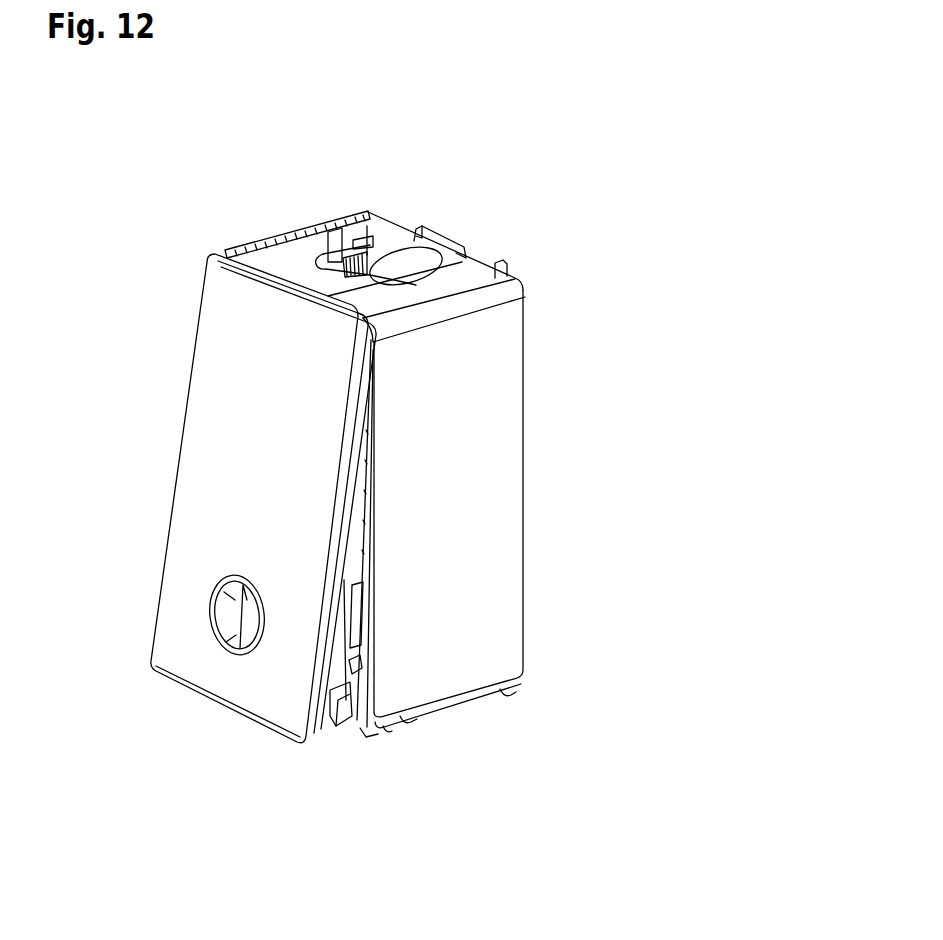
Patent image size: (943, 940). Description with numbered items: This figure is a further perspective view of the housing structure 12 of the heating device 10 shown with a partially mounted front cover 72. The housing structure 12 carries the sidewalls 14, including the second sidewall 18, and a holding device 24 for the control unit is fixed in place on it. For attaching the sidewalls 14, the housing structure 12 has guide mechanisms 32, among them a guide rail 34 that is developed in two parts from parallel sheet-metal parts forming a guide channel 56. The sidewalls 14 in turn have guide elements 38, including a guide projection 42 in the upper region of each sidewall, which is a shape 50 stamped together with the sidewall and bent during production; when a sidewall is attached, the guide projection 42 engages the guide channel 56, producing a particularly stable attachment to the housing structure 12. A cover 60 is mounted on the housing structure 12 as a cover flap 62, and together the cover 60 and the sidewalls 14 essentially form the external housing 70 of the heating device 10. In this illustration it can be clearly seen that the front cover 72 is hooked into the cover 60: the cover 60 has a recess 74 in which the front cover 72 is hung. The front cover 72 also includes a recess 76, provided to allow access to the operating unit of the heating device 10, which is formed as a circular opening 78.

The heating device 10 is at (546, 106).
The housing structure 12 is at (488, 228).
The sidewalls 14 is at (440, 541).
The second sidewall 18 is at (427, 664).
The holding device 24 is at (339, 704).
The guide mechanisms 32 is at (411, 223).
The guide rail 34 is at (411, 223).
The guide channel 56 is at (382, 238).
The guide elements 38 is at (383, 194).
The guide projection 42 is at (383, 194).
The shape 50 is at (331, 223).
The cover 60 is at (297, 204).
The cover flap 62 is at (292, 240).
The external housing 70 is at (207, 248).
The front cover 72 is at (200, 500).
The recess 74 is at (261, 268).
The recess 76 is at (172, 615).
The circular opening 78 is at (212, 598).